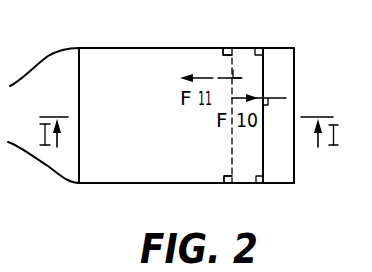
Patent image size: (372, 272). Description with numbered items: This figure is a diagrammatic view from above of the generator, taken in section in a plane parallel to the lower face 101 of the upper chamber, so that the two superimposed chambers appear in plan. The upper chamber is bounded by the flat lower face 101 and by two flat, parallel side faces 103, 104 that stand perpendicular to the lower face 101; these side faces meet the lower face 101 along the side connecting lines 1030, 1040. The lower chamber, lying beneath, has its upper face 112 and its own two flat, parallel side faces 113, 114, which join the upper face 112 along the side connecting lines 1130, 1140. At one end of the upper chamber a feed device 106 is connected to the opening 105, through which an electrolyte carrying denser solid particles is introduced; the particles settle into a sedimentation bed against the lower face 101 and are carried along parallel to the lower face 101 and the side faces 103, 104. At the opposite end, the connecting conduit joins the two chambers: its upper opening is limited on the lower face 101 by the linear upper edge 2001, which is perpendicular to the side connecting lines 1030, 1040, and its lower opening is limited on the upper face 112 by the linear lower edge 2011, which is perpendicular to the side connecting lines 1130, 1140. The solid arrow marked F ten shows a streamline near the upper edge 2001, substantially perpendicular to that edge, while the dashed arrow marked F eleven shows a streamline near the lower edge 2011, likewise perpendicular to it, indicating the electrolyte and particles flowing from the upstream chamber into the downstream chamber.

The lower face 101 is at (242, 170).
The side face 103 is at (140, 184).
The side face 104 is at (107, 47).
The opening 105 is at (82, 107).
The feed device 106 is at (44, 57).
The upper face 112 is at (79, 157).
The side face 113 is at (192, 198).
The side face 114 is at (172, 47).
The side connecting line 1030 is at (108, 182).
The side connecting line 1040 is at (92, 54).
The side connecting line 1130 is at (186, 183).
The side connecting line 1140 is at (207, 48).
The upper edge 2001 is at (269, 64).
The lower edge 2011 is at (232, 141).